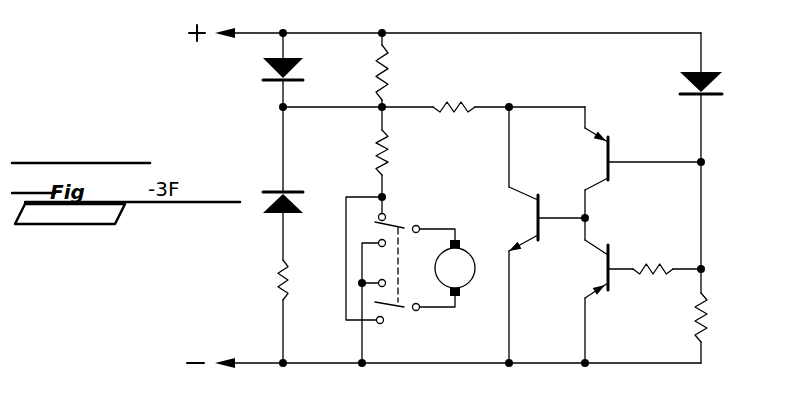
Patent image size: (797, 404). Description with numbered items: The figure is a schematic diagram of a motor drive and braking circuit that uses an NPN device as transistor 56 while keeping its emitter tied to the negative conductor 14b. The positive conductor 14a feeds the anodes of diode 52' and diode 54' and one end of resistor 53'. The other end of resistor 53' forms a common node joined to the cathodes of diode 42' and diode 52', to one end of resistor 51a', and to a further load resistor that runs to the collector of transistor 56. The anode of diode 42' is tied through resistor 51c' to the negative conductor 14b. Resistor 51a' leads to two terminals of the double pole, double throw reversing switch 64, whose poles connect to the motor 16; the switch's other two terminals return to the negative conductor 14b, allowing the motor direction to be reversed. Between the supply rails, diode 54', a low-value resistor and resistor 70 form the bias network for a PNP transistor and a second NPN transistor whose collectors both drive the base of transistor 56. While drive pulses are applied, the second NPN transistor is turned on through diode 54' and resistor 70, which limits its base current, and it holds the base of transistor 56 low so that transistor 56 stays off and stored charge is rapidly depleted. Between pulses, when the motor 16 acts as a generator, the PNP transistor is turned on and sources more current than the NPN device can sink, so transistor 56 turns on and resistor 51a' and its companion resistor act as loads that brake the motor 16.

The positive conductor 14a is at (268, 30).
The negative conductor 14b is at (268, 361).
The diode 52′ is at (304, 70).
The resistor 53′ is at (388, 65).
The diode 54′ is at (683, 78).
The resistor 51a′ is at (388, 152).
The diode 42′ is at (325, 210).
The resistor 51c′ is at (300, 276).
The double pole, double throw reversing switch 64 is at (390, 312).
The motor 16 is at (468, 280).
The NPN transistor 56 is at (536, 228).
The resistor 70 is at (645, 266).